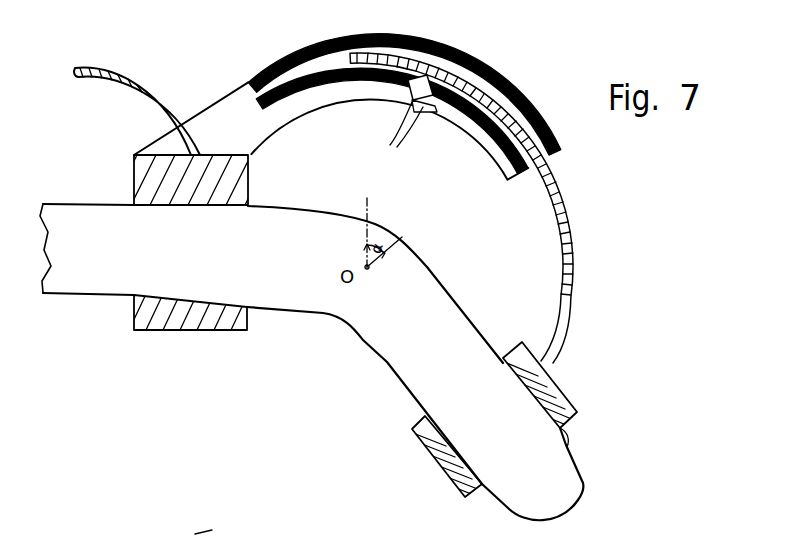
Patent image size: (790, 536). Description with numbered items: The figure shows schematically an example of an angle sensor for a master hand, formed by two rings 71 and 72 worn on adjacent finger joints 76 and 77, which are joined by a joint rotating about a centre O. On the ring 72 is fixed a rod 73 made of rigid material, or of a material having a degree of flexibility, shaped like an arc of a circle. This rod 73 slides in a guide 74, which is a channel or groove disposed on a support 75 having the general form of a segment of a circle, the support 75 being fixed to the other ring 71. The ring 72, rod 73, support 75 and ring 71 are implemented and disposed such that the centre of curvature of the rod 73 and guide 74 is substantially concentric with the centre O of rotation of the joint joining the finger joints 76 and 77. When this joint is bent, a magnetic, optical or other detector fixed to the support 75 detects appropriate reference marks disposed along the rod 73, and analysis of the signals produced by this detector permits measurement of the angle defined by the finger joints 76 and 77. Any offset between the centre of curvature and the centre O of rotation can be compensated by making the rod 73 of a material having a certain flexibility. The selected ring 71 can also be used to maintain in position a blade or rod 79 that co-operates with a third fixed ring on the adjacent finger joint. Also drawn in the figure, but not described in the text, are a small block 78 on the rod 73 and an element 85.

The ring 71 is at (228, 317).
The ring 72 is at (447, 468).
The rod 73 is at (568, 232).
The guide 74 is at (443, 52).
The support 75 is at (313, 113).
The finger joint 76 is at (402, 340).
The finger joint 77 is at (102, 262).
The slider 78 is at (430, 98).
The blade or rod 79 is at (105, 66).
The lever 85 is at (171, 524).